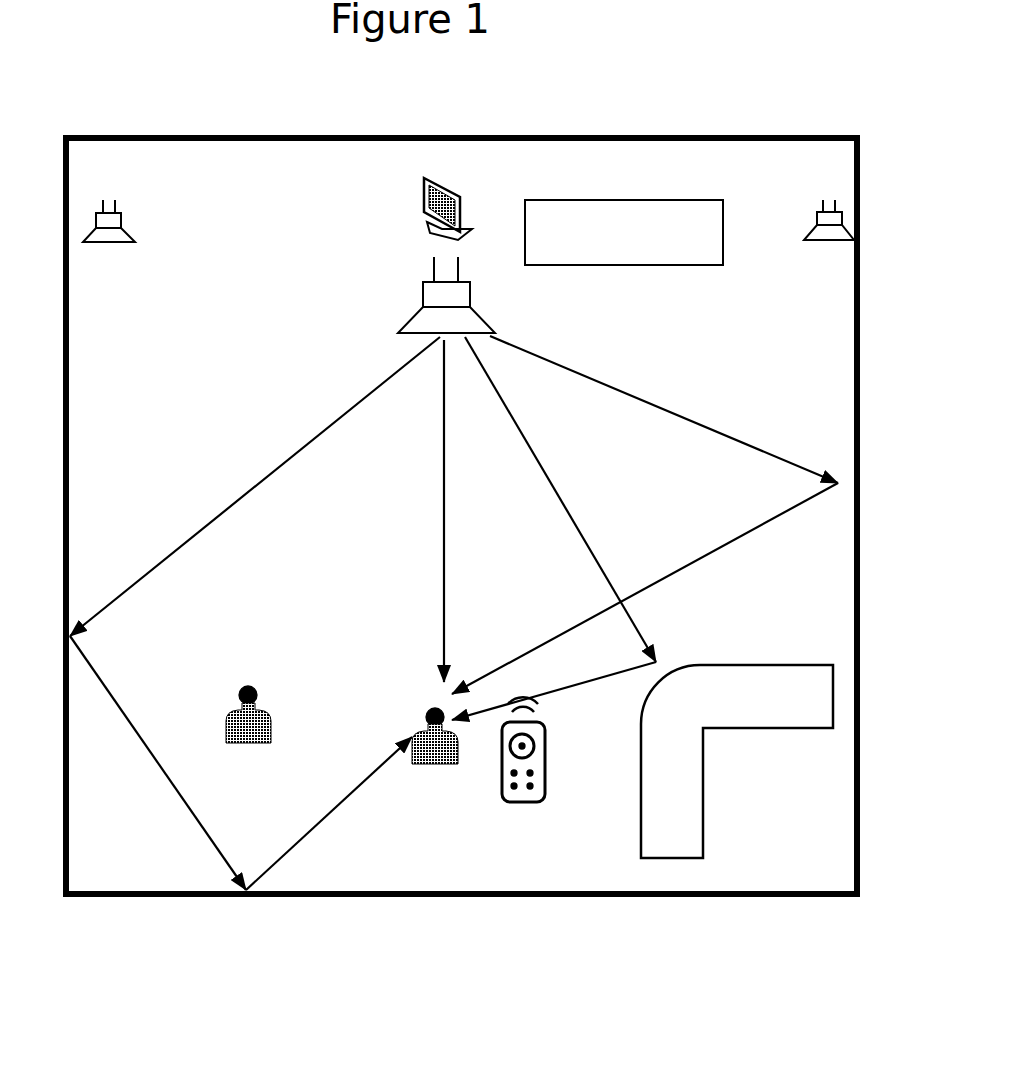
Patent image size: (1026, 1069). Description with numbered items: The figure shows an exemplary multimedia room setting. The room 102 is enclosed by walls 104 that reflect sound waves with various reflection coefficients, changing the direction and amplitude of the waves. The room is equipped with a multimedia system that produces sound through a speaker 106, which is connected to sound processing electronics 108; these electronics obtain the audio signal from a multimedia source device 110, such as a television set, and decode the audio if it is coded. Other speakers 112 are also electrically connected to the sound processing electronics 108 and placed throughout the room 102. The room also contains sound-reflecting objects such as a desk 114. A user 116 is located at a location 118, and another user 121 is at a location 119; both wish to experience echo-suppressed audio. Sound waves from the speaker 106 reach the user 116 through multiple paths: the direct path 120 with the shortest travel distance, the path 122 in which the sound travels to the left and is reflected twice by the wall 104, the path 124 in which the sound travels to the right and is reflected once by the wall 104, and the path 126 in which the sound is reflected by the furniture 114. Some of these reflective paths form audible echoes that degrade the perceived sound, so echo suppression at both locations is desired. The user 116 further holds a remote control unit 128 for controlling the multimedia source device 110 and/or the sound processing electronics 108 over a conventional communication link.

The room 102 is at (173, 108).
The wall 104 is at (821, 136).
The speaker 106 is at (506, 312).
The sound processing electronics 108 is at (700, 199).
The multimedia source device 110 is at (470, 218).
The other speakers 112 is at (130, 224).
The desk 114 is at (641, 843).
The user 116 is at (412, 713).
The location 118 is at (437, 780).
The location 119 is at (264, 761).
The direct path 120 is at (444, 551).
The another user 121 is at (264, 681).
The path 122 is at (98, 650).
The path 124 is at (790, 492).
The path 126 is at (665, 648).
The remote control unit 128 is at (504, 797).